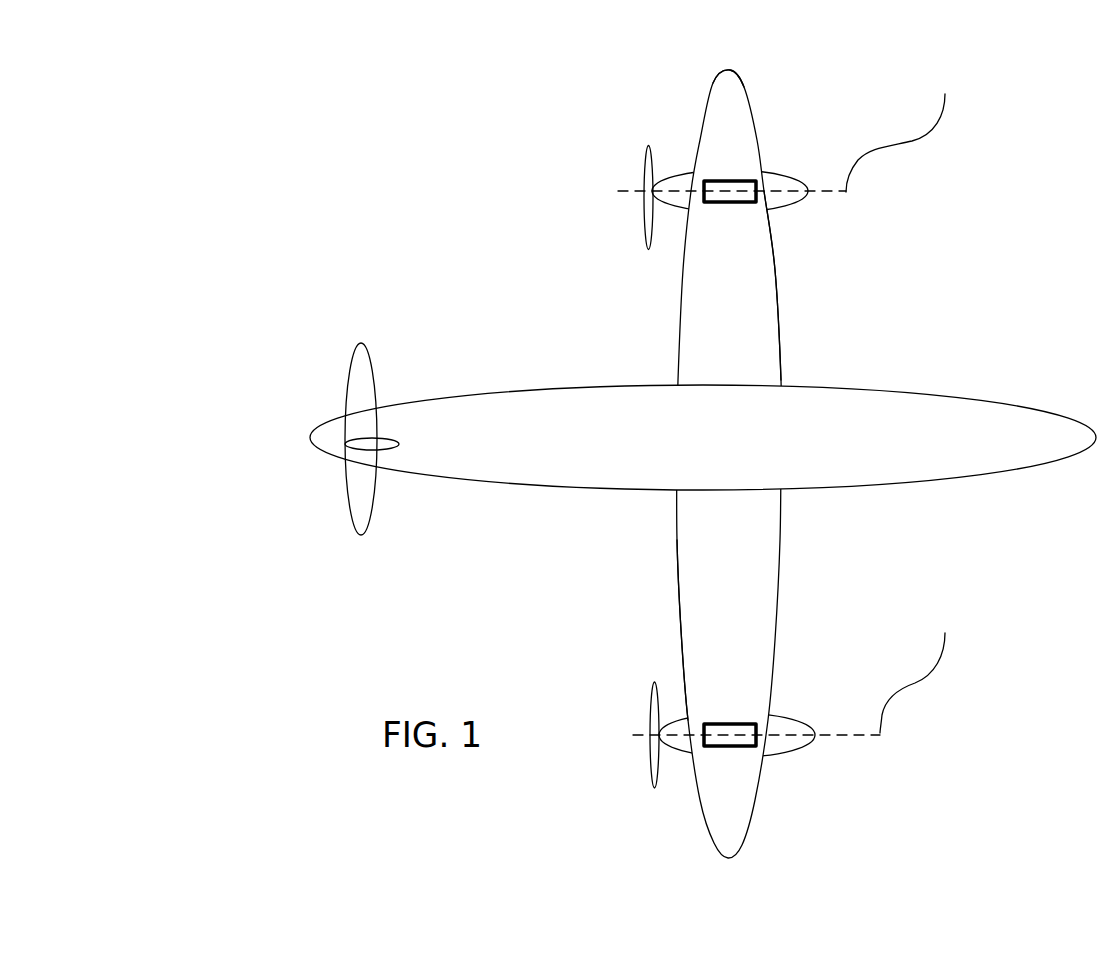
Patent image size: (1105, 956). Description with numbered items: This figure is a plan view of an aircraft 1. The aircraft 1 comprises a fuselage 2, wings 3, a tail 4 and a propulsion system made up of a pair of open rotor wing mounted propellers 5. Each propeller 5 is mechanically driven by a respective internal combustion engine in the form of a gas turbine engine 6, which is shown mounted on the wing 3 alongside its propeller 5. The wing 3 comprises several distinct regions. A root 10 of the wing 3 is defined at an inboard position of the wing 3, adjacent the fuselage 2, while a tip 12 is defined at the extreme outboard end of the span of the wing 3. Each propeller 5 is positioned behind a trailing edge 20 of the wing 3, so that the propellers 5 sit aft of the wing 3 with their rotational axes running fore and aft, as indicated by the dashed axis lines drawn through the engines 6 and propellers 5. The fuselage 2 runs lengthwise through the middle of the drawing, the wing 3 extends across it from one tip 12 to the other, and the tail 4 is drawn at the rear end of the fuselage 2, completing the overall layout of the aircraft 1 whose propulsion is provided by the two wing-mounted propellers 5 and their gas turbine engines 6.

The aircraft 1 is at (608, 446).
The fuselage 2 is at (520, 385).
The wing 3 is at (707, 563).
The tail 4 is at (345, 507).
The open rotor wing mounted propeller 5 is at (612, 233).
The gas turbine engine 6 is at (730, 178).
The root 10 is at (781, 377).
The tip 12 is at (730, 70).
The trailing edge 20 is at (677, 535).